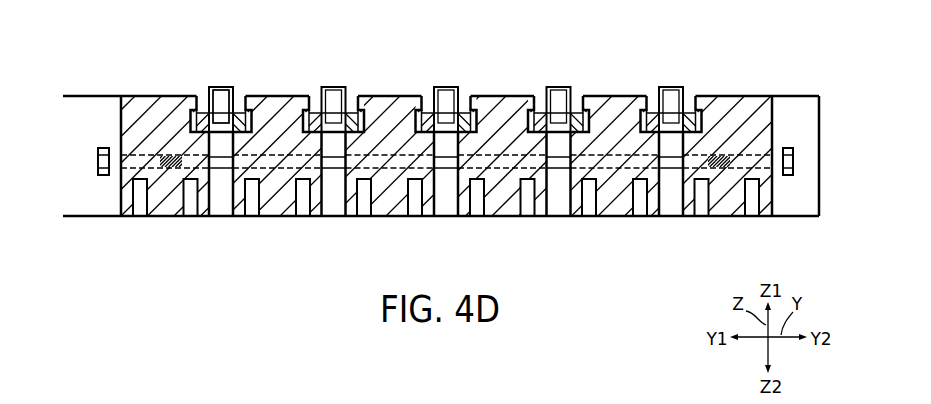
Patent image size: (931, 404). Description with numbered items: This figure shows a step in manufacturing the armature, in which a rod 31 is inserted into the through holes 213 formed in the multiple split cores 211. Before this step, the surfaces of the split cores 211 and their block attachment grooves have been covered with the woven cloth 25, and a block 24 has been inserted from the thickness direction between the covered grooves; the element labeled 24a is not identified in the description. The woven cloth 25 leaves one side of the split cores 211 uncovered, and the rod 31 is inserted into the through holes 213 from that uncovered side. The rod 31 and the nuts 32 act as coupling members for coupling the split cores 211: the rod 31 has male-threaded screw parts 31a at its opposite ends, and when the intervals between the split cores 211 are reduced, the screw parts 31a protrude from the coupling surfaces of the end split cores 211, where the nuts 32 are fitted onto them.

The block 24 is at (228, 86).
The screw head opening 24a is at (210, 74).
The through hole 213 is at (152, 157).
The split core 211 is at (737, 106).
The woven cloth 25 is at (781, 96).
The rod 31 is at (494, 160).
The screw part 31a is at (165, 168).
The nut 32 is at (101, 176).